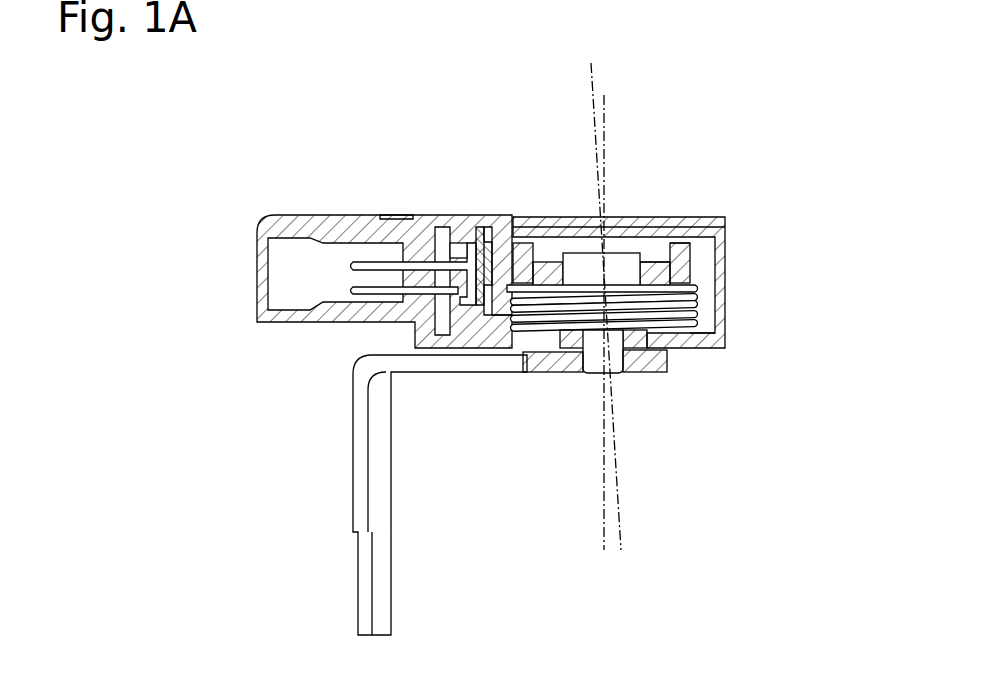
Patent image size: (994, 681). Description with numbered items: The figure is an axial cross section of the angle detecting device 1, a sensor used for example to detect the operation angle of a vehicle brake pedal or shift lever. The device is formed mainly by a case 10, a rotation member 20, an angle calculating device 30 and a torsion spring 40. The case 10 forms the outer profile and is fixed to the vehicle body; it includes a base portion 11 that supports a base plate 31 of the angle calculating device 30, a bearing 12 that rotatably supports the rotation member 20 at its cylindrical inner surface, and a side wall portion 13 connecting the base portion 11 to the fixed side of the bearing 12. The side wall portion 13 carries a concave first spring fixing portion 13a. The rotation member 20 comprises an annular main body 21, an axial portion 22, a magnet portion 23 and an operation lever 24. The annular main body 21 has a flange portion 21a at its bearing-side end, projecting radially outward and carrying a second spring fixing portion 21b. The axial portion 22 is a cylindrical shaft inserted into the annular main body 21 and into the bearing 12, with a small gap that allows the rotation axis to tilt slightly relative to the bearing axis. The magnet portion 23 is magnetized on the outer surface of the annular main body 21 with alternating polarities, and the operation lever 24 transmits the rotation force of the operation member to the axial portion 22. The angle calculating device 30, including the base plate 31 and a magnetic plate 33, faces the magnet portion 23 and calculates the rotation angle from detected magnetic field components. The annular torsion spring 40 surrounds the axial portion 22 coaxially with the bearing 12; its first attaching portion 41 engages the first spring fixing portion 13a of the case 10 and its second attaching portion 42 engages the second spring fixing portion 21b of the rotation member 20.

The angle detecting device 1 is at (256, 127).
The case 10 is at (355, 175).
The base portion 11 is at (462, 238).
The bearing 12 is at (627, 353).
The side wall portion 13 is at (672, 355).
The first spring fixing portion 13a is at (700, 350).
The rotation member 20 is at (656, 216).
The annular main body 21 is at (550, 237).
The flange portion 21a is at (693, 246).
The second spring fixing portion 21b is at (693, 275).
The axial portion 22 is at (593, 375).
The magnet portion 23 is at (678, 217).
The operation lever 24 is at (391, 485).
The angle calculating device 30 is at (503, 238).
The base plate 31 is at (476, 232).
The magnetic plate 33 is at (493, 336).
The torsion spring 40 is at (533, 368).
The first attaching portion 41 is at (727, 322).
The second attaching portion 42 is at (716, 290).